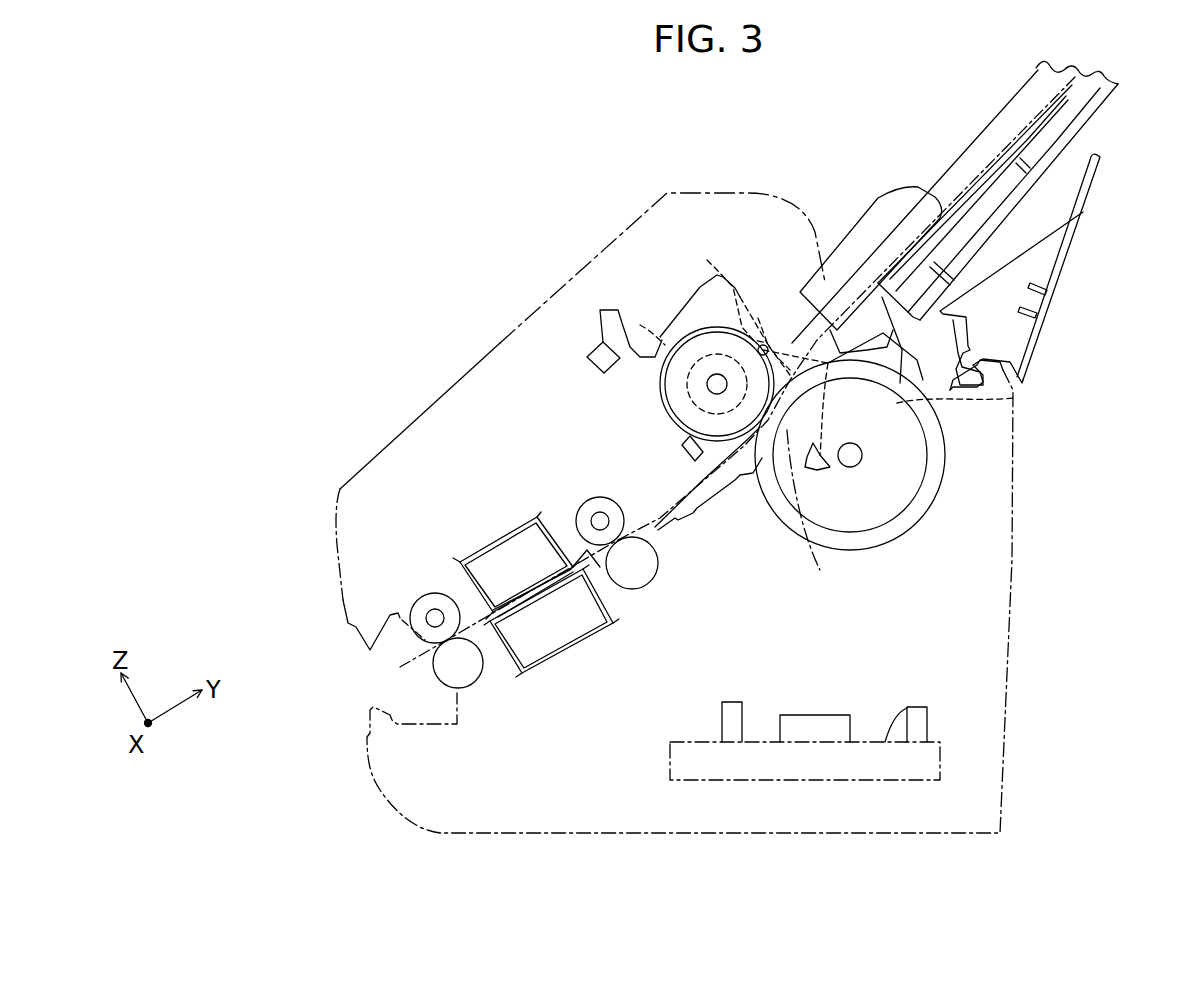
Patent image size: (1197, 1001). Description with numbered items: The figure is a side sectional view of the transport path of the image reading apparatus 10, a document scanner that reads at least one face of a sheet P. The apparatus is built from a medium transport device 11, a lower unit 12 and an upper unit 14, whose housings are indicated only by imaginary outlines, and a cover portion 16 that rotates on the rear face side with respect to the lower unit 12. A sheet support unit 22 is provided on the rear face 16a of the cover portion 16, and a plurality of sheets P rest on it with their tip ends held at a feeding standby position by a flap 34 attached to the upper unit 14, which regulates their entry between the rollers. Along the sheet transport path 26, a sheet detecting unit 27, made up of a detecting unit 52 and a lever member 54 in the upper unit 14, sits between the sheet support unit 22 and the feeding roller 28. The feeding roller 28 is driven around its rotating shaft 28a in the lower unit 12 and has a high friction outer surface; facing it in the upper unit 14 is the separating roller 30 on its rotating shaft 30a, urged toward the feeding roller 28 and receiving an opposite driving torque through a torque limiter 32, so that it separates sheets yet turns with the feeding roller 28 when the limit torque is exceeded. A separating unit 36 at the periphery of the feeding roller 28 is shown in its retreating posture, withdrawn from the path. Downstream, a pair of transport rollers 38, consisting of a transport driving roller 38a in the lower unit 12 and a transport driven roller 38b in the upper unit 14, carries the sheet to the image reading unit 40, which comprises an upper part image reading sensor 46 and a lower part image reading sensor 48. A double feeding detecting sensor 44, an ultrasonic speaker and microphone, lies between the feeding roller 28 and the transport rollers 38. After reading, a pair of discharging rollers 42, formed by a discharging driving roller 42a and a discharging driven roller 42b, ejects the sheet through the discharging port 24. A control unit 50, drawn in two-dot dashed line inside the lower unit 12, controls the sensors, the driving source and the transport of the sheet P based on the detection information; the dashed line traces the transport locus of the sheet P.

The image reading apparatus 10 is at (471, 192).
The medium transport device 11 is at (836, 238).
The lower unit 12 is at (1013, 498).
The upper unit 14 is at (500, 343).
The cover portion 16 is at (1093, 123).
The rear face of the cover portion 16a is at (975, 184).
The sheet support unit 22 is at (1000, 155).
The discharging port 24 is at (372, 682).
The sheet transport path 26 is at (782, 328).
The sheet detecting unit 27 is at (672, 308).
The feeding roller 28 is at (912, 547).
The rotating shaft 28a is at (852, 453).
The separating roller 30 is at (664, 412).
The rotating shaft 30a is at (717, 390).
The torque limiter 32 is at (688, 397).
The flap 34 is at (810, 560).
The separating unit 36 is at (1013, 400).
The pair of transport rollers 38 is at (712, 645).
The transport driving roller 38a is at (640, 566).
The transport driven roller 38b is at (606, 530).
The image reading unit 40 is at (525, 502).
The pair of discharging rollers 42 is at (527, 765).
The discharging driving roller 42a is at (465, 665).
The discharging driven roller 42b is at (437, 640).
The double feeding detecting sensor 44 is at (715, 470).
The upper part image reading sensor 46 is at (510, 550).
The lower part image reading sensor 48 is at (557, 630).
The control unit 50 is at (907, 708).
The detecting unit 52 is at (597, 350).
The lever member 54 is at (707, 268).
The sheet P is at (950, 170).